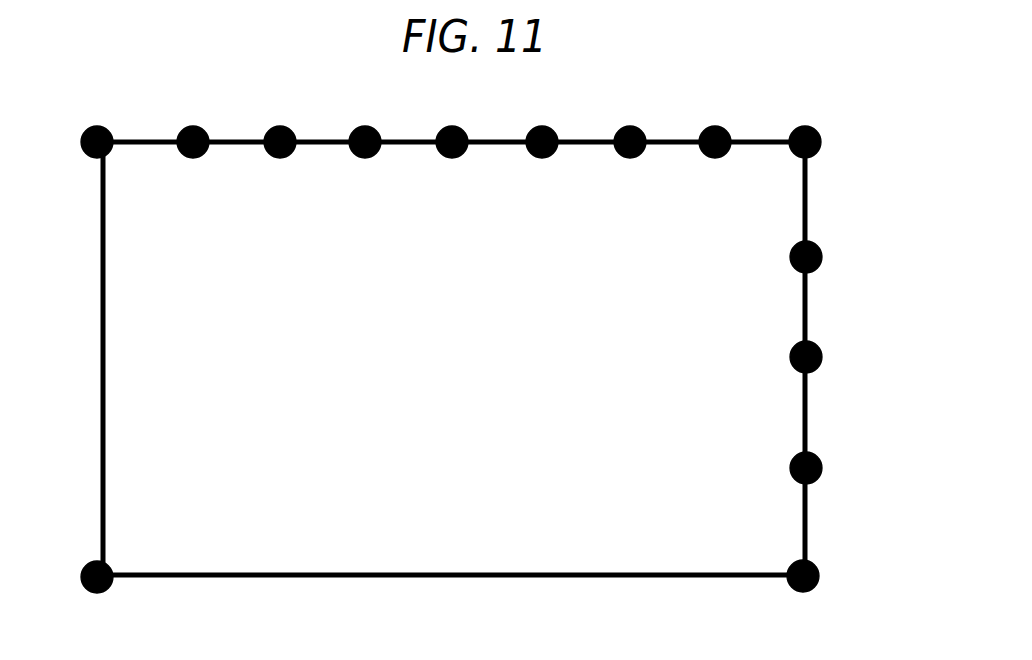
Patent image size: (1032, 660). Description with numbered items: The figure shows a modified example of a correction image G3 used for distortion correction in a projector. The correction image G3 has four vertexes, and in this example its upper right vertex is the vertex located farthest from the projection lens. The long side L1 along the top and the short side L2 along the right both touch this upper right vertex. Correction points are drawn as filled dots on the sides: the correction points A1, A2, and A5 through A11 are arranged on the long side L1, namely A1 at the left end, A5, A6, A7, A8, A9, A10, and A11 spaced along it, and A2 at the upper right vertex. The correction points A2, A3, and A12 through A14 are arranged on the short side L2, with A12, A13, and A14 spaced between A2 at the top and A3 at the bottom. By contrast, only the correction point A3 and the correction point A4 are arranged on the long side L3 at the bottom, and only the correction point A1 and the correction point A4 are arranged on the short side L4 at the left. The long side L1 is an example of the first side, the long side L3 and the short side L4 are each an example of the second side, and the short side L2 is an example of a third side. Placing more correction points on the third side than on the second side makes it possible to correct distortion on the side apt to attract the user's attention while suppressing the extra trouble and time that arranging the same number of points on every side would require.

The correction image G3 is at (918, 96).
The long side L1 is at (413, 145).
The short side L2 is at (807, 525).
The long side L3 is at (458, 576).
The short side L4 is at (102, 383).
The correction point A1 is at (84, 135).
The correction point A2 is at (792, 132).
The correction point A3 is at (819, 582).
The correction point A4 is at (84, 570).
The correction point A5 is at (192, 129).
The correction point A6 is at (277, 129).
The correction point A7 is at (362, 129).
The correction point A8 is at (447, 129).
The correction point A9 is at (534, 131).
The correction point A10 is at (622, 132).
The correction point A11 is at (708, 130).
The correction point A12 is at (822, 255).
The correction point A13 is at (822, 355).
The correction point A14 is at (822, 466).